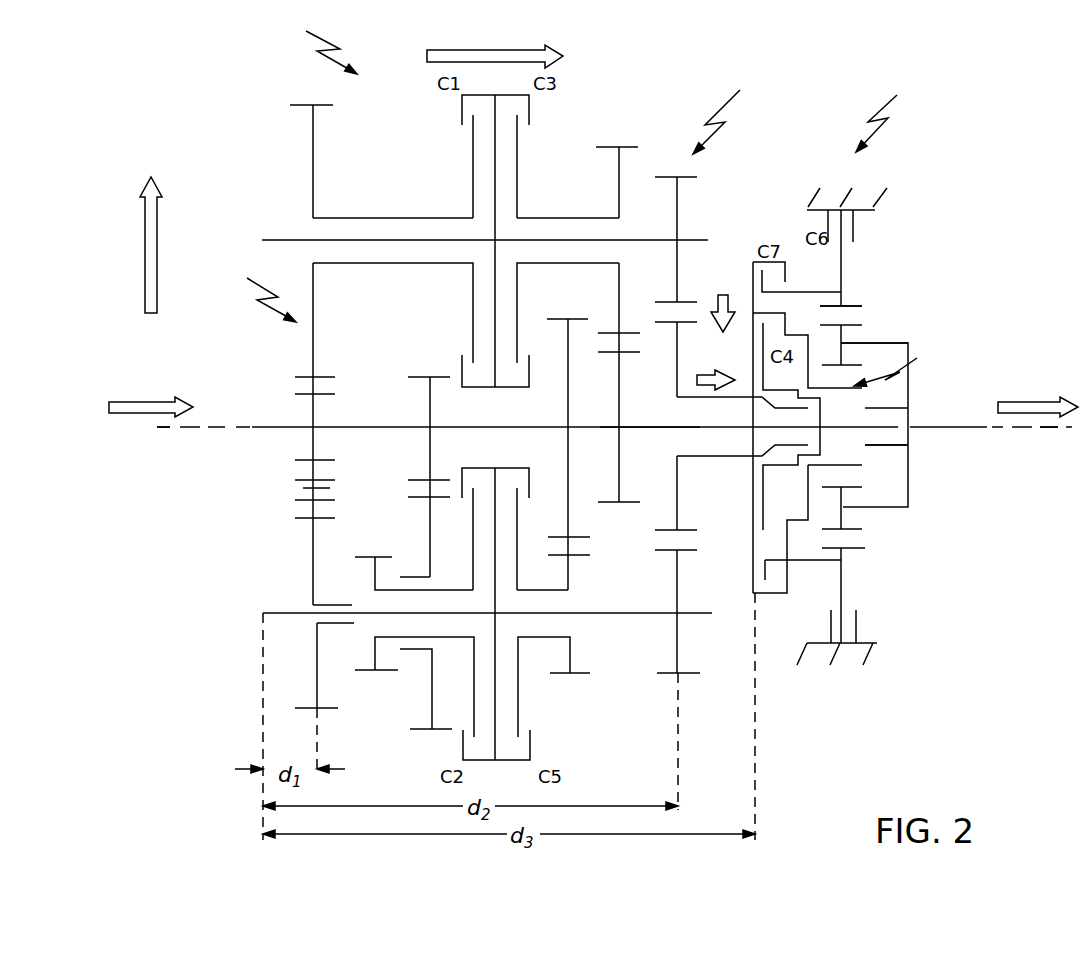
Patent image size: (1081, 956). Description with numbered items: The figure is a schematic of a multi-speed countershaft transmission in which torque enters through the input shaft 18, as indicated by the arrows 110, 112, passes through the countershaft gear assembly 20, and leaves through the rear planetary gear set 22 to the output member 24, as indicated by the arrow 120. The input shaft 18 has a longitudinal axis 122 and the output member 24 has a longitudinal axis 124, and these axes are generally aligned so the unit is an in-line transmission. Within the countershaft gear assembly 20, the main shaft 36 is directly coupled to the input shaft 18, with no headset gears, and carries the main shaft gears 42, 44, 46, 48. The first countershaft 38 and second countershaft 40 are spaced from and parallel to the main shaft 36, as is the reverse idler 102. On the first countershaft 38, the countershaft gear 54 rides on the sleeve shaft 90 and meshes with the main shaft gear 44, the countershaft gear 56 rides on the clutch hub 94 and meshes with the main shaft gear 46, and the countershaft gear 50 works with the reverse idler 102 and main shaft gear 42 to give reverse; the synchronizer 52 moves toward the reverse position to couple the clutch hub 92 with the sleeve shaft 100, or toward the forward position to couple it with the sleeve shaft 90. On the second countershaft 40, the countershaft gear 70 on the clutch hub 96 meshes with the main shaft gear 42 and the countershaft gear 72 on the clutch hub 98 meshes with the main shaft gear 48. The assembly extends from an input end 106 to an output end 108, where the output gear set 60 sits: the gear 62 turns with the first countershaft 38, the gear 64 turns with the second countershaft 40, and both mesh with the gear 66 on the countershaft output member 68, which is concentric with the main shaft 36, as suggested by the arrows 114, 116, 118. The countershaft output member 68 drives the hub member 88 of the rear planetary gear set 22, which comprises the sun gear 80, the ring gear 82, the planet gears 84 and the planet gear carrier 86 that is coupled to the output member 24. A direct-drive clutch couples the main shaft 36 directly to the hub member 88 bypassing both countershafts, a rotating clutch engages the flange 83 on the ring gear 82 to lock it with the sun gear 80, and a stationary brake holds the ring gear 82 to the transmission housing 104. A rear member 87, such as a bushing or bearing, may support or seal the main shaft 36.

The input shaft 18 is at (268, 425).
The countershaft gear assembly 20 is at (315, 45).
The rear planetary gear set 22 is at (890, 113).
The output member 24 is at (951, 427).
The main shaft 36 is at (504, 426).
The first countershaft 38 is at (280, 613).
The second countershaft 40 is at (283, 240).
The main shaft gear 42 is at (313, 417).
The main shaft gear 44 is at (428, 378).
The main shaft gear 46 is at (568, 402).
The main shaft gear 48 is at (618, 411).
The countershaft gear 50 is at (318, 689).
The synchronizer 52 is at (375, 644).
The first countershaft gear 54 is at (428, 506).
The first countershaft gear 56 is at (572, 655).
The output gear set 60 is at (728, 114).
The gear 62 is at (678, 581).
The gear 64 is at (677, 204).
The gear 66 is at (677, 350).
The countershaft output member 68 is at (715, 458).
The second countershaft gear 70 is at (313, 163).
The second countershaft gear 72 is at (618, 172).
The sun gear 80 is at (856, 425).
The ring gear 82 is at (852, 304).
The flange 83 is at (800, 291).
The planet gears 84 is at (845, 335).
The planet gear carrier 86 is at (895, 344).
The rear member 87 is at (888, 445).
The hub member 88 is at (752, 266).
The sleeve shaft 90 is at (418, 652).
The C2 clutch hub 92 is at (457, 590).
The C5 clutch hub 94 is at (547, 591).
The C1 clutch hub 96 is at (395, 218).
The C3 clutch hub 98 is at (552, 218).
The sleeve shaft 100 is at (330, 605).
The reverse idler 102 is at (302, 488).
The transmission housing 104 is at (886, 198).
The input end 106 is at (408, 325).
The output end 108 is at (673, 417).
The arrow 110 is at (143, 402).
The arrow 112 is at (143, 266).
The arrow 114 is at (487, 50).
The arrow 116 is at (723, 296).
The arrow 118 is at (713, 387).
The arrow 120 is at (1032, 402).
The longitudinal axis 122 is at (180, 432).
The longitudinal axis 124 is at (1023, 427).